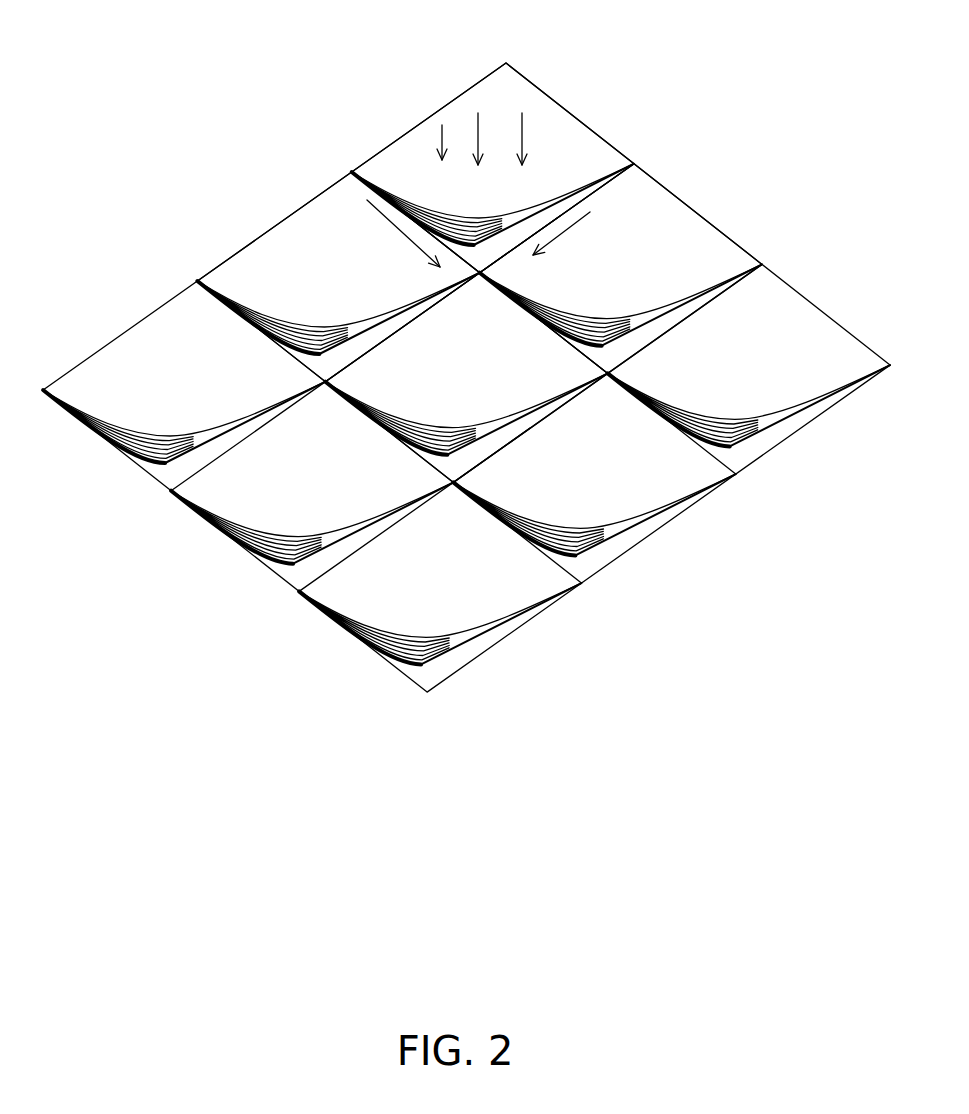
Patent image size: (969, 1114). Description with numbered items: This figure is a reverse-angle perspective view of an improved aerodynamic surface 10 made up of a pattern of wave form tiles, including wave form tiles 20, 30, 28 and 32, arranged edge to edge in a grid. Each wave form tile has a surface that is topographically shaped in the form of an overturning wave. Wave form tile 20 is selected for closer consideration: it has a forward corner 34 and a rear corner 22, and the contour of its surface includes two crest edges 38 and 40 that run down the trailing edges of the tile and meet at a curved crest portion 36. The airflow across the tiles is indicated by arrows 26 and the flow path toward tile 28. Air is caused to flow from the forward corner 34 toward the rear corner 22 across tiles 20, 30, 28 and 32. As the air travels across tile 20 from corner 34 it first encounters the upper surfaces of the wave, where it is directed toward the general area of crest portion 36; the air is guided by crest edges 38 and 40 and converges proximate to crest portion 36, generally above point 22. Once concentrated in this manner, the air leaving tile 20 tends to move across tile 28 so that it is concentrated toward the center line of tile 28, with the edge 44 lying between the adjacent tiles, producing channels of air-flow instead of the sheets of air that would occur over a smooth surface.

The aerodynamic surface 10 is at (466, 358).
The wave form tile 20 is at (488, 149).
The rear corner 22 is at (503, 258).
The direction arrows 26 is at (484, 235).
The wave form tile 28 is at (465, 300).
The wave form tile 30 is at (343, 300).
The wave form tile 32 is at (678, 285).
The forward corner 34 is at (515, 105).
The crest portion 36 is at (545, 205).
The crest edge 38 is at (483, 213).
The crest edge 40 is at (433, 210).
The lower ridge edge 44 is at (472, 466).